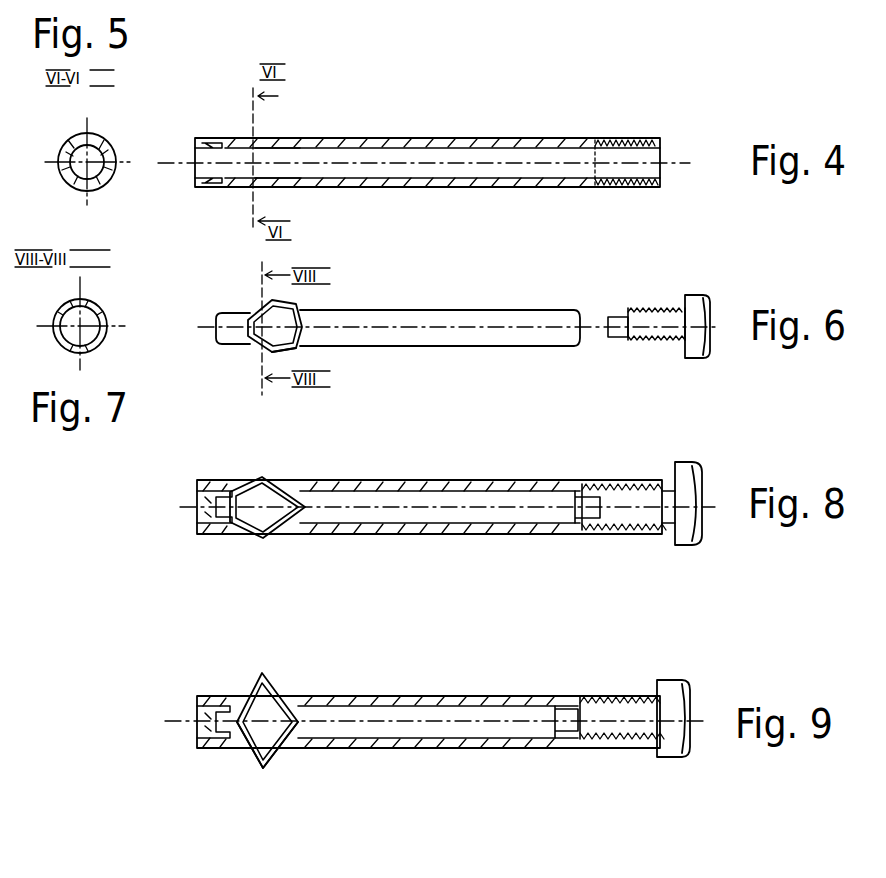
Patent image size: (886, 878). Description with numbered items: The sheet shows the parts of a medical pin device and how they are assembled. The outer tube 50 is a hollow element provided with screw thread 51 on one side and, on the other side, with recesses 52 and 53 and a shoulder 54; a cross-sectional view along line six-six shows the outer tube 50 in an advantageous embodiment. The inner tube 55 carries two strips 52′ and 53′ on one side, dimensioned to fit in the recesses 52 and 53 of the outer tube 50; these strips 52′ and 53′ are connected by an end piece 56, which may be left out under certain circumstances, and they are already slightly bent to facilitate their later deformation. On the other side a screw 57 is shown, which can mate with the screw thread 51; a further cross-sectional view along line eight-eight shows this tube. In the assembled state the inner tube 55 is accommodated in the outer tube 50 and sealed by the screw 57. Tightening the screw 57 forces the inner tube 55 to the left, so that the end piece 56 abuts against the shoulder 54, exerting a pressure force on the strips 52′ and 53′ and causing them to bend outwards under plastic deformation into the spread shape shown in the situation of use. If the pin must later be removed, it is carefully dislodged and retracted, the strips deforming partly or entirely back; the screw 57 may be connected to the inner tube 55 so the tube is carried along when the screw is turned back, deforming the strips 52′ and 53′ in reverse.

In FIG. 4, the outer tube 50 is at (462, 139).
In FIG. 8, the outer tube 50 is at (436, 480).
In FIG. 9, the outer tube 50 is at (428, 722).
In FIG. 4, the screw thread 51 is at (630, 140).
In FIG. 4, the recess 52 is at (282, 140).
In FIG. 4, the recess 53 is at (275, 184).
In FIG. 4, the shoulder 54 is at (213, 140).
In FIG. 6, the inner tube 55 is at (497, 322).
In FIG. 8, the inner tube 55 is at (488, 514).
In FIG. 9, the inner tube 55 is at (453, 727).
In FIG. 6, the end piece 56 is at (228, 320).
In FIG. 8, the end piece 56 is at (214, 507).
In FIG. 9, the end piece 56 is at (213, 722).
In FIG. 6, the screw 57 is at (656, 318).
In FIG. 8, the screw 57 is at (642, 500).
In FIG. 9, the screw 57 is at (627, 710).
In FIG. 6, the strip 52′ is at (297, 304).
In FIG. 8, the strip 52′ is at (256, 585).
In FIG. 9, the strip 52′ is at (257, 672).
In FIG. 6, the strip 53′ is at (284, 346).
In FIG. 9, the strip 53′ is at (252, 770).